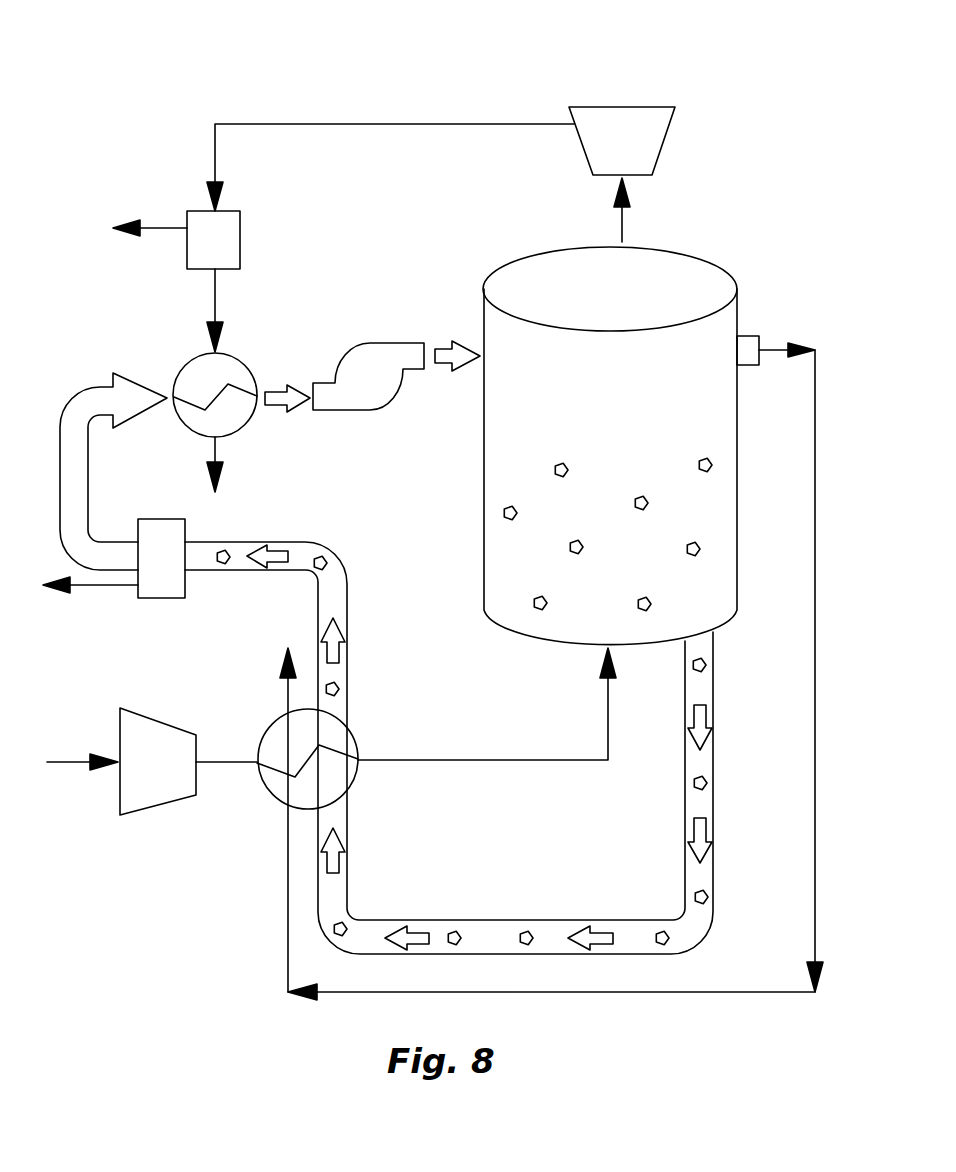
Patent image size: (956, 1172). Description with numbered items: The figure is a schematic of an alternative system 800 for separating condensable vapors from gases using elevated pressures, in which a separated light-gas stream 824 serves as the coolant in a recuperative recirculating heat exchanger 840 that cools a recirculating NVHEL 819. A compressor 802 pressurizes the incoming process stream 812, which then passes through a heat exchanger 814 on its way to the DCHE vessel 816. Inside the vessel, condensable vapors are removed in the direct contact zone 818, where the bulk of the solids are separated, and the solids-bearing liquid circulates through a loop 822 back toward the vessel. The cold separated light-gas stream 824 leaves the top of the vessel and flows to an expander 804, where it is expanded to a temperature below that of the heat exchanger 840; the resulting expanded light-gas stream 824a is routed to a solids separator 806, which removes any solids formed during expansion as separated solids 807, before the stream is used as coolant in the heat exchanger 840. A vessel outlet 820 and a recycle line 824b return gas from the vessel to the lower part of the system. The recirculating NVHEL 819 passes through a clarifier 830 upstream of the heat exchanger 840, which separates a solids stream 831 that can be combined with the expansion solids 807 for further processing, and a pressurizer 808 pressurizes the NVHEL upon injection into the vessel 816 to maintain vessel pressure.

The system 800 is at (187, 55).
The compressor 802 is at (157, 807).
The expander 804 is at (665, 142).
The solids separator 806 is at (240, 237).
The separated solids 807 is at (160, 228).
The pressurizer 808 is at (378, 343).
The process stream 812 is at (82, 758).
The heat exchanger 814 is at (277, 798).
The DCHE vessel 816 is at (484, 440).
The DCHE direct contact zone 818 is at (512, 545).
The recirculating NVHEL 819 is at (78, 477).
The vessel outlet 820 is at (748, 336).
The solids circulation loop 822 is at (488, 932).
The light-gas stream 824 is at (622, 227).
The expanded light-gas stream 824a is at (343, 124).
The recycle gas line 824b is at (815, 712).
The clarifier 830 is at (160, 598).
The solids stream 831 is at (108, 587).
The recuperative recirculating heat exchanger 840 is at (187, 362).